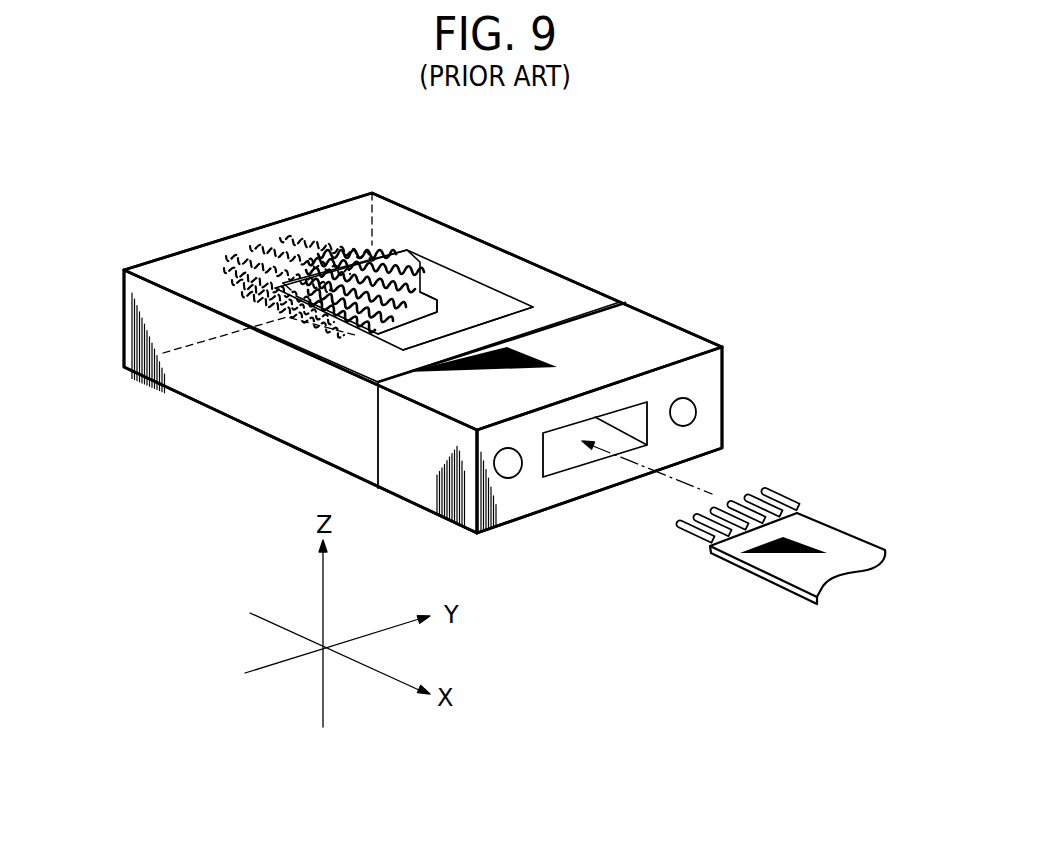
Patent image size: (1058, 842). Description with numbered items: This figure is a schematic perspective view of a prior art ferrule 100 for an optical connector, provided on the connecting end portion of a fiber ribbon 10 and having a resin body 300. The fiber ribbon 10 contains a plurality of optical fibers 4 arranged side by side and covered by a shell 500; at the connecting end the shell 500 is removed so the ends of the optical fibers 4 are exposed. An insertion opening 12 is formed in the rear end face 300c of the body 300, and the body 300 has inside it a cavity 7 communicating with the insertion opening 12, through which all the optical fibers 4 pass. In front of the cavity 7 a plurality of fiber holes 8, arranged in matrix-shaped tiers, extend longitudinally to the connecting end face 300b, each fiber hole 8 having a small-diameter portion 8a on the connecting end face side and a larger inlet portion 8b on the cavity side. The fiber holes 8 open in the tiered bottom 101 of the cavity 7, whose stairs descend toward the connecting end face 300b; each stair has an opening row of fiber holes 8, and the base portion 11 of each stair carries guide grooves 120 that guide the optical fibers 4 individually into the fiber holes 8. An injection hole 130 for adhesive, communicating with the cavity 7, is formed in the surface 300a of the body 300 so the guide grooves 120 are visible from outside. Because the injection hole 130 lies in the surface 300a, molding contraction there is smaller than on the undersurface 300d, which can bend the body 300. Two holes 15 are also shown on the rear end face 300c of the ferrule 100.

The ferrule 100 is at (623, 208).
The body 300 is at (648, 338).
The surface 300a is at (478, 258).
The connecting end face 300b is at (185, 278).
The rear end face 300c is at (570, 483).
The undersurface 300d is at (247, 401).
The injection hole 130 is at (380, 350).
The guide grooves 120 is at (478, 322).
The bottom 101 is at (420, 258).
The base portion 11 is at (420, 295).
The cavity 7 is at (497, 297).
The fiber holes 8 is at (345, 240).
The small-diameter portion 8a is at (320, 237).
The inlet portion 8b is at (353, 242).
The insertion opening 12 is at (637, 415).
The positioning hole 15 is at (683, 412).
The fiber ribbon 10 is at (830, 534).
The shell 500 is at (790, 563).
The optical fibers 4 is at (757, 505).